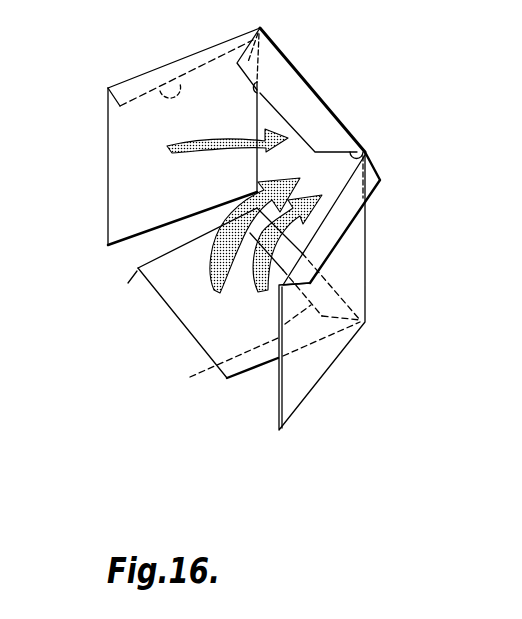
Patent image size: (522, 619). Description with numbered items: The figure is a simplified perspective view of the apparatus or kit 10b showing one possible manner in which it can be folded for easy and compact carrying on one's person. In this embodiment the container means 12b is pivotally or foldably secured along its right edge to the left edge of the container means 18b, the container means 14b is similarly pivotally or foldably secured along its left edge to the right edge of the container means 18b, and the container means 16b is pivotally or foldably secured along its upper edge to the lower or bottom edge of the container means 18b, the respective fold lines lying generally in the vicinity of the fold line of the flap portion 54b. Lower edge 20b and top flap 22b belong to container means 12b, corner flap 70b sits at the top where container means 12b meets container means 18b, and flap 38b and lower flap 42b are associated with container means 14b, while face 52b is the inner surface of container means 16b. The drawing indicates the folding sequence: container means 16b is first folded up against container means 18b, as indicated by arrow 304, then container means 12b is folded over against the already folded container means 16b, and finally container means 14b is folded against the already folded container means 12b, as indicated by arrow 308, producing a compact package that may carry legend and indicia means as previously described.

The apparatus or kit 10b is at (391, 81).
The container means 12b is at (106, 147).
The container means 14b is at (274, 406).
The container means 16b is at (148, 303).
The container means 18b is at (371, 154).
The bottom edge of rear panel 20b is at (132, 205).
The top flap 22b is at (185, 83).
The corner flap 38b is at (347, 229).
The lower flap 42b is at (288, 388).
The inner panel face 52b is at (193, 320).
The flap portion 54b is at (215, 373).
The folded corner flap 70b is at (262, 92).
The arrow 304 is at (192, 158).
The arrow 308 is at (255, 290).